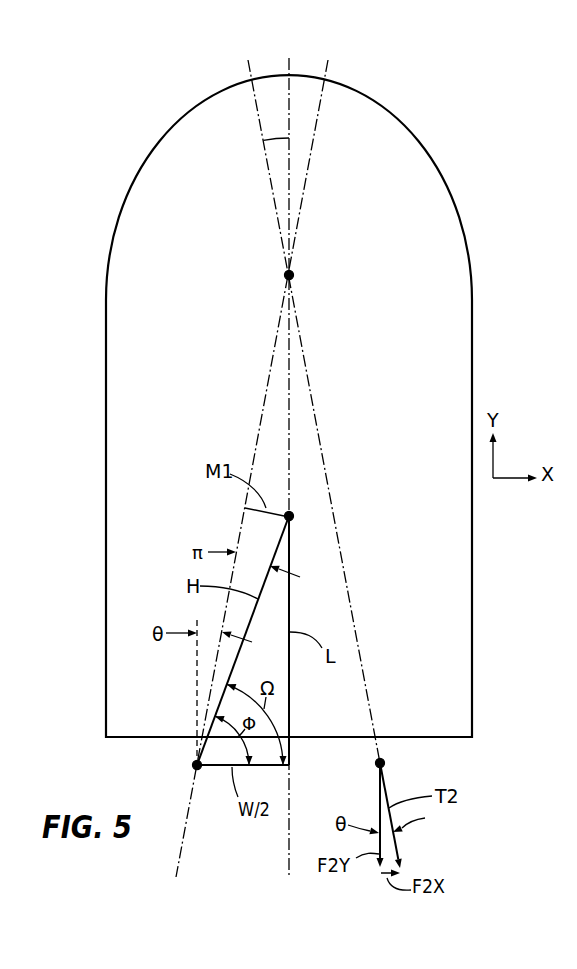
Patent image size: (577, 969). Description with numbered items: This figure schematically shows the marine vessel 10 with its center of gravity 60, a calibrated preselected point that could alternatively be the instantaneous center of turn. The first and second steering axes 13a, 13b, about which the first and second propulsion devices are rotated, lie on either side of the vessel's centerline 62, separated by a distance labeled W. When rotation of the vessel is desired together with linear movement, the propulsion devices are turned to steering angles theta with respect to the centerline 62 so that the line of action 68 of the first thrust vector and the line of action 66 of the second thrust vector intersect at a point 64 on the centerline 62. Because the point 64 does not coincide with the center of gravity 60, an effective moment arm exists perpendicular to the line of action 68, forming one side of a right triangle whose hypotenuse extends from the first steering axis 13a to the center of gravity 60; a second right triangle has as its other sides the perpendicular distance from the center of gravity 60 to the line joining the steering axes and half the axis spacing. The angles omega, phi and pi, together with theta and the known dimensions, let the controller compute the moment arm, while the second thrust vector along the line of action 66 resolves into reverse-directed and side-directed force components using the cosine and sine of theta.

The marine vessel 10 is at (443, 178).
The first steering axis 13a is at (195, 765).
The second steering axis 13b is at (384, 763).
The center of gravity 60 is at (294, 514).
The centerline 62 is at (270, 140).
The point 64 is at (293, 274).
The line of action 66 is at (255, 103).
The line of action 68 is at (320, 105).